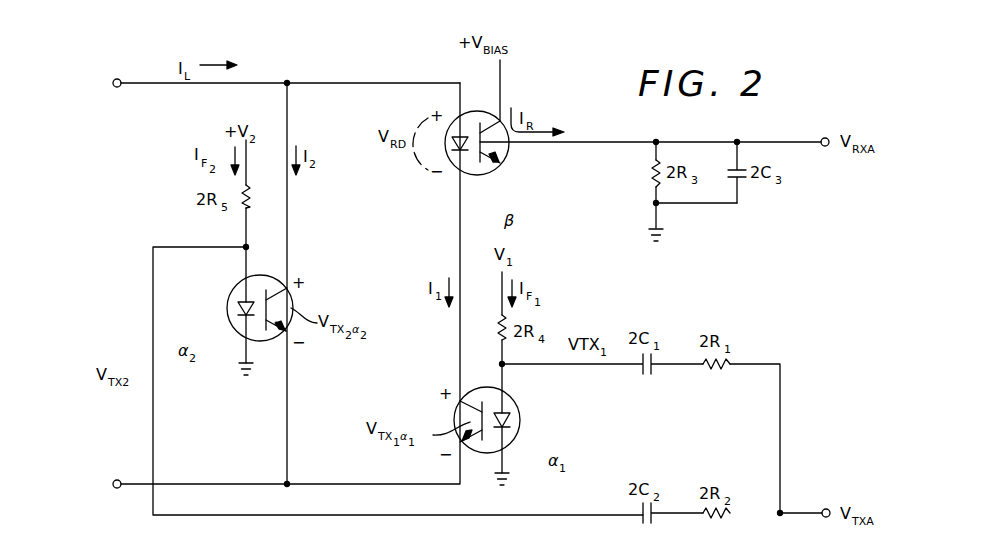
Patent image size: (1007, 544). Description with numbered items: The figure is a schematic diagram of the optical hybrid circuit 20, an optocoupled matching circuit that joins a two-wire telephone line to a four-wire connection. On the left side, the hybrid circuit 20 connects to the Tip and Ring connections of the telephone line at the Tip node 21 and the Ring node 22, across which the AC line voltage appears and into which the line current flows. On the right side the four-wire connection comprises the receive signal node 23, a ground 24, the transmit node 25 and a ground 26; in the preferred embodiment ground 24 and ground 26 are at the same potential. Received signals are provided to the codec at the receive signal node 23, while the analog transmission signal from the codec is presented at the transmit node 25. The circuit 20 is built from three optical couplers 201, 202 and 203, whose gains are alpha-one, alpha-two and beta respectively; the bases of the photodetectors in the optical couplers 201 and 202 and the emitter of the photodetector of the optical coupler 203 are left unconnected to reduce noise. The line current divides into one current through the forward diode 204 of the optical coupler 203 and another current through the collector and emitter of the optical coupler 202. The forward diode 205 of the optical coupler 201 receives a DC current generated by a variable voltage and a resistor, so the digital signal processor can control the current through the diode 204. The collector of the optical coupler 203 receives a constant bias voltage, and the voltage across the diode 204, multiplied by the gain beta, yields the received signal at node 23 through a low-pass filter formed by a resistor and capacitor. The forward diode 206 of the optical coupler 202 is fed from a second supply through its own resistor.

The optical hybrid circuit 20 is at (339, 60).
The Tip node 21 is at (110, 78).
The Ring node 22 is at (114, 478).
The receive signal node 23 is at (828, 136).
The ground 24 is at (667, 236).
The transmit node 25 is at (830, 507).
The ground 26 is at (512, 478).
The optical coupler 201 is at (518, 404).
The optical coupler 202 is at (233, 292).
The optical coupler 203 is at (508, 159).
The forward diode 204 is at (468, 147).
The forward diode 205 is at (509, 422).
The forward diode 206 is at (236, 311).